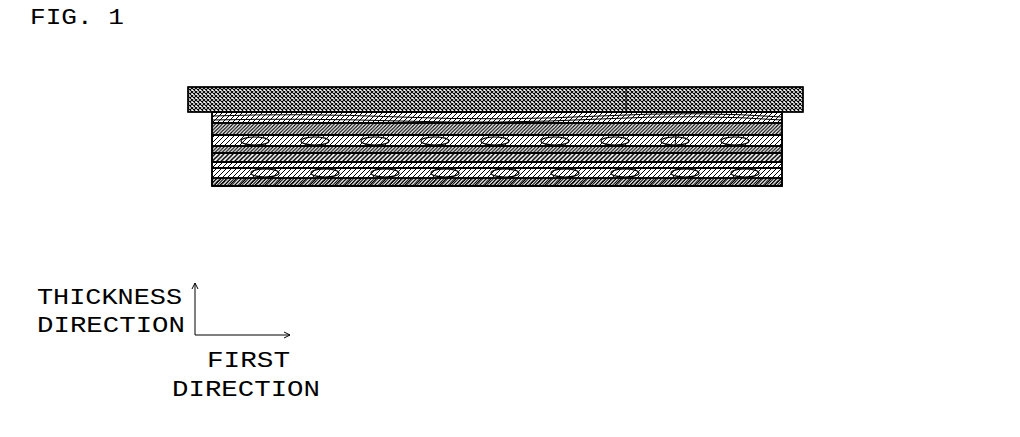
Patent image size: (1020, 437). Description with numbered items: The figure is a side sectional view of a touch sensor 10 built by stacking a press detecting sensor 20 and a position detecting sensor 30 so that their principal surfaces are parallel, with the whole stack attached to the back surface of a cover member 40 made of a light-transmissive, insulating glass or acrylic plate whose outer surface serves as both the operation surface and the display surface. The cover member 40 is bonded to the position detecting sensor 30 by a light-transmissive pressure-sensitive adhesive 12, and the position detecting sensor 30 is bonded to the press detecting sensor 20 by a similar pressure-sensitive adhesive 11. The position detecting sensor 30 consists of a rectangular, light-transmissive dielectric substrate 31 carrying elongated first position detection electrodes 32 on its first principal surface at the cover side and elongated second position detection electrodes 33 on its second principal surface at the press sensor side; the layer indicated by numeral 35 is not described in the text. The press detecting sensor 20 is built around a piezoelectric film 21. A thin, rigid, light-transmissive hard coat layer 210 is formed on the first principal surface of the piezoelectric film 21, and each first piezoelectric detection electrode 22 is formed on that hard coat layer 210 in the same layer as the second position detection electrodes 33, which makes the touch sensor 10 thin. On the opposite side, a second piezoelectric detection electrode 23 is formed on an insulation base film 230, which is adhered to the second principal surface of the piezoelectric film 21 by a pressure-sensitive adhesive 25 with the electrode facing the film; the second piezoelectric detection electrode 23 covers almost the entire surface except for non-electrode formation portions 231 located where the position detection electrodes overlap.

The touch sensor 10 is at (846, 84).
The pressure-sensitive adhesive 11 is at (674, 148).
The pressure-sensitive adhesive 12 is at (626, 96).
The press detecting sensor 20 is at (850, 130).
The piezoelectric film 21 is at (783, 153).
The first piezoelectric detection electrode 22 is at (783, 124).
The second piezoelectric detection electrode 23 is at (763, 185).
The pressure-sensitive adhesive 25 is at (783, 168).
The position detecting sensor 30 is at (140, 107).
The dielectric substrate 31 is at (212, 128).
The first position detection electrode 32 is at (212, 116).
The second position detection electrode 33 is at (212, 148).
The adhesive layer 35 is at (212, 140).
The cover member 40 is at (783, 87).
The hard coat layer 210 is at (783, 142).
The insulation base film 230 is at (743, 185).
The non-electrode formation portion 231 is at (710, 188).